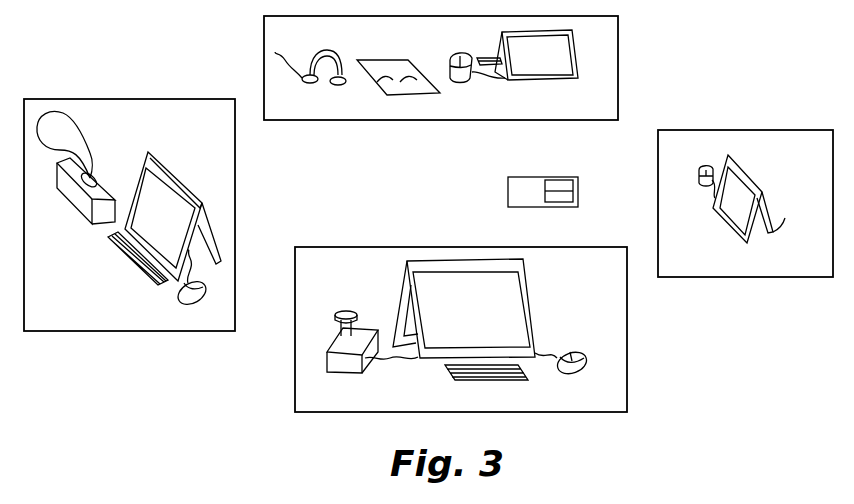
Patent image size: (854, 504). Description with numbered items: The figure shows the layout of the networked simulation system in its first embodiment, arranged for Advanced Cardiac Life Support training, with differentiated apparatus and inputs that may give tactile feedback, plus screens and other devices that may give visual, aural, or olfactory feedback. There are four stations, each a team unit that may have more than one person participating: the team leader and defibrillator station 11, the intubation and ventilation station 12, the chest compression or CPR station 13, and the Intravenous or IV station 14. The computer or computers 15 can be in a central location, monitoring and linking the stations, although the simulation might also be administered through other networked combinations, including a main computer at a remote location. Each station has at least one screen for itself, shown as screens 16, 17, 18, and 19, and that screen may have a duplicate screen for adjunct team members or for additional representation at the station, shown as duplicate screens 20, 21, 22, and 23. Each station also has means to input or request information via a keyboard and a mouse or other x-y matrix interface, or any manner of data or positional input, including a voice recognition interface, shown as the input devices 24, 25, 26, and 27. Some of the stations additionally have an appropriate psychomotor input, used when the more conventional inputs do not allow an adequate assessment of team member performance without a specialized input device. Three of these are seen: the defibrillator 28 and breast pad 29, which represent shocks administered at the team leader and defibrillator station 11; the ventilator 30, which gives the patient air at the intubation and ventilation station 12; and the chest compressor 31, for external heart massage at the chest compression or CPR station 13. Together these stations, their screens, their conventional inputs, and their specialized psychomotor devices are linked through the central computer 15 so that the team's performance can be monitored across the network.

The team leader and defibrillator station 11 is at (440, 122).
The intubation and ventilation station 12 is at (237, 193).
The chest compression or CPR station 13 is at (422, 247).
The Intravenous or IV station 14 is at (658, 195).
The computer 15 is at (528, 175).
The screen 16 is at (500, 47).
The screen 17 is at (152, 198).
The screen 18 is at (510, 302).
The screen 19 is at (765, 197).
The duplicate screen 20 is at (547, 68).
The duplicate screen 21 is at (188, 183).
The duplicate screen 22 is at (405, 297).
The duplicate screen 23 is at (737, 205).
The keyboard and mouse input 24 is at (462, 82).
The keyboard and mouse input 25 is at (178, 297).
The keyboard and mouse input 26 is at (577, 377).
The keyboard and mouse input 27 is at (698, 168).
The defibrillator 28 is at (322, 83).
The breast pad 29 is at (387, 63).
The ventilator 30 is at (87, 127).
The chest compressor 31 is at (368, 367).